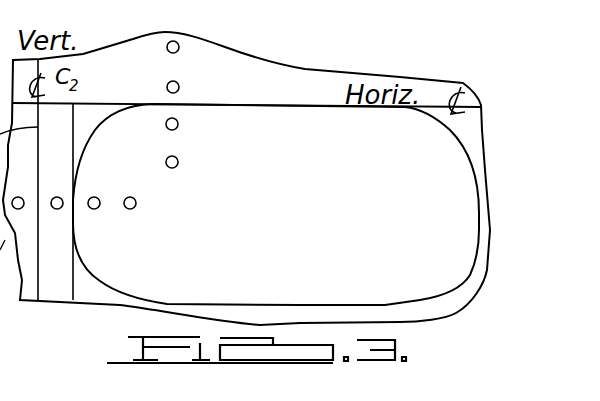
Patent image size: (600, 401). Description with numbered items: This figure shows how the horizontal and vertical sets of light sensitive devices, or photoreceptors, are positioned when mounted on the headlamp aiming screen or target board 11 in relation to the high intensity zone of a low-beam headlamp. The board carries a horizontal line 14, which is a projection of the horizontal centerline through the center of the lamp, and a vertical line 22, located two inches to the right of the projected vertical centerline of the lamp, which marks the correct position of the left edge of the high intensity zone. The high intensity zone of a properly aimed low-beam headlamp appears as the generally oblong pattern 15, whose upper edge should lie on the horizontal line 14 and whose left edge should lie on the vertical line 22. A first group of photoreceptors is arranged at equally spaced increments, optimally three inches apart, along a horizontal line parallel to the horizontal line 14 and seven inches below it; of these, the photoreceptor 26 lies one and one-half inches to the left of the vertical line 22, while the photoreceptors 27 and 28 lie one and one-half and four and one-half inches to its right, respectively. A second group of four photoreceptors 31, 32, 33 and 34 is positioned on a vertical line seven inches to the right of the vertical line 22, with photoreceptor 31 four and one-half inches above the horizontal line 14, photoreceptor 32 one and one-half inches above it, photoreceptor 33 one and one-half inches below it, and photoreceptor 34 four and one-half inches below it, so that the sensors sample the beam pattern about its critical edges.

The headlamp aiming screen or target board 11 is at (117, 300).
The horizontal line 14 is at (272, 82).
The high intensity zone 15 is at (363, 305).
The vertical line 22 is at (75, 130).
The photoreceptor or light sensitive device 26 is at (58, 210).
The photoreceptor or light sensitive device 27 is at (98, 196).
The photoreceptor or light sensitive device 28 is at (133, 209).
The photoreceptor or light sensitive device 31 is at (179, 44).
The photoreceptor or light sensitive device 32 is at (177, 85).
The photoreceptor or light sensitive device 33 is at (178, 123).
The photoreceptor or light sensitive device 34 is at (178, 162).